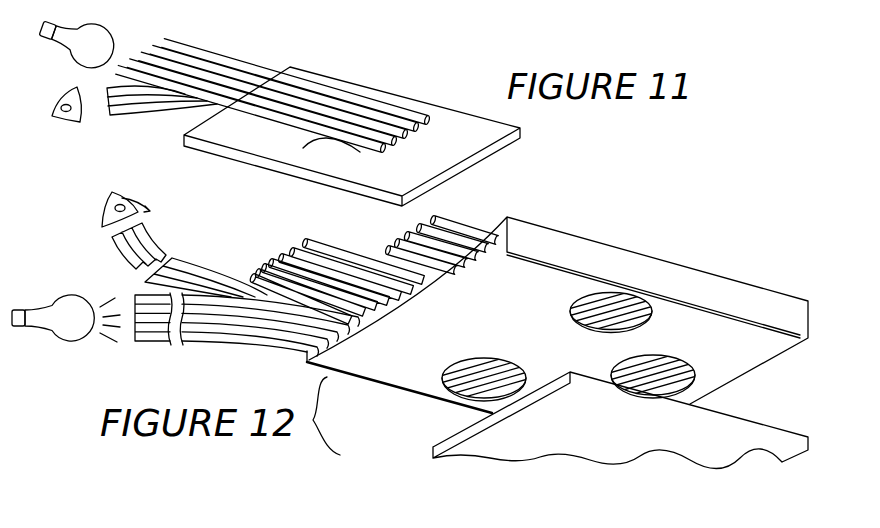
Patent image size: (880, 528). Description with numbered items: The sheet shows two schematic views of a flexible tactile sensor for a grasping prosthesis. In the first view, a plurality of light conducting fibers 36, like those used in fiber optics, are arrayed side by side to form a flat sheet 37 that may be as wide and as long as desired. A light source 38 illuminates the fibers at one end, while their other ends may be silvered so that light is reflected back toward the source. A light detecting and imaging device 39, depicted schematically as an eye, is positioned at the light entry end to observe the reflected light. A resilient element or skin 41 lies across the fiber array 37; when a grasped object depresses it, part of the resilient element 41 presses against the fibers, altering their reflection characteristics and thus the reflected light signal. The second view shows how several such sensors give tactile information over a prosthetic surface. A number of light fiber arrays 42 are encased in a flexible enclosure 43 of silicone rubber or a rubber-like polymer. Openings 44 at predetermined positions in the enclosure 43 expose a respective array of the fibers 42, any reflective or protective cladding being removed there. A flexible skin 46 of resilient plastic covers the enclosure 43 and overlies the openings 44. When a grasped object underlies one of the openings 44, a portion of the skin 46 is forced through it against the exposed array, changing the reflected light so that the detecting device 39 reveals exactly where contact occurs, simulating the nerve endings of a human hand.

In FIG. 11, the light conducting fibers 36 is at (350, 97).
In FIG. 11, the flat sheet 37 is at (437, 117).
In FIG. 11, the light source 38 is at (112, 33).
In FIG. 12, the light source 38 is at (72, 295).
In FIG. 11, the light detecting and imaging device 39 is at (67, 125).
In FIG. 12, the light detecting and imaging device 39 is at (122, 196).
In FIG. 11, the resilient element 41 is at (473, 161).
In FIG. 12, the light fiber arrays 42 is at (420, 250).
In FIG. 12, the flexible enclosure 43 is at (592, 250).
In FIG. 12, the openings 44 is at (627, 322).
In FIG. 12, the flexible skin 46 is at (595, 428).